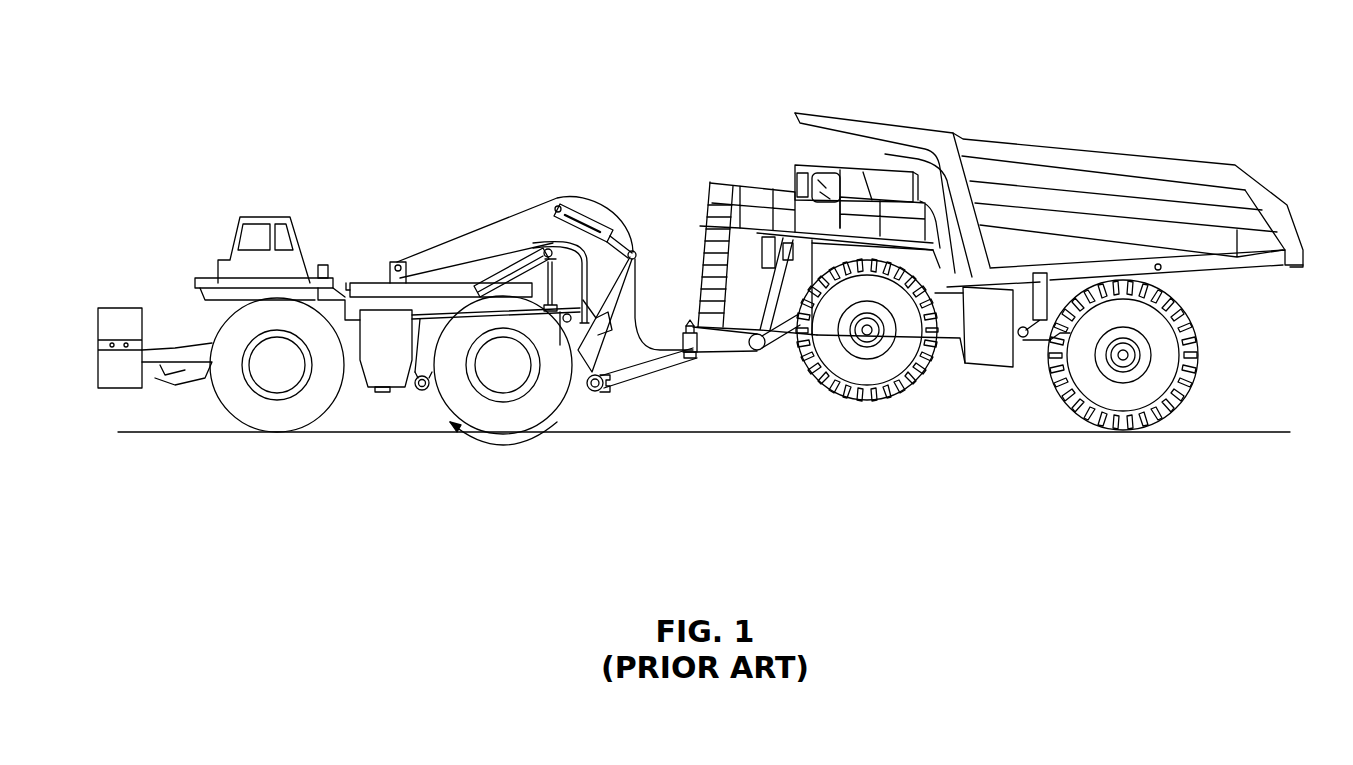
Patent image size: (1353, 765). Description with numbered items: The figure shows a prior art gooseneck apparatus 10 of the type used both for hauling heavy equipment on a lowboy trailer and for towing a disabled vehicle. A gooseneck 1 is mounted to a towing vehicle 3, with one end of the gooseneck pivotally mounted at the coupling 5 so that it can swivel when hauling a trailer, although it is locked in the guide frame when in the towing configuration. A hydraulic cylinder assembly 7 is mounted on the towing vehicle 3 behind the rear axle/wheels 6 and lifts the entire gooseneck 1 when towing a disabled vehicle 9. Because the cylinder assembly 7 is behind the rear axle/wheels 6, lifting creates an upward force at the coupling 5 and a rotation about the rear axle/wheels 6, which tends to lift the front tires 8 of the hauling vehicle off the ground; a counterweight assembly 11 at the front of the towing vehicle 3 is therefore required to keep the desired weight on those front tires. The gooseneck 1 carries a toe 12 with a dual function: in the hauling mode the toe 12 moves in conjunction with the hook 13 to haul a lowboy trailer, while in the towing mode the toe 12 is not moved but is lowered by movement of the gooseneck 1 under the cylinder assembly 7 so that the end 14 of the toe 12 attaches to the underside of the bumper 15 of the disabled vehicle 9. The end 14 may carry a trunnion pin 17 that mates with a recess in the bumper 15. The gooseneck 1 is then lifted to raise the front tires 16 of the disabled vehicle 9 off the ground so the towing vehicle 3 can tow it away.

The gooseneck 1 is at (583, 170).
The towing vehicle 3 is at (310, 213).
The pivotal mounting 5 is at (410, 235).
The rear axle/wheels 6 is at (563, 407).
The hydraulic cylinder assembly 7 is at (568, 273).
The front tires 8 is at (340, 407).
The disabled vehicle 9 is at (1062, 122).
The gooseneck apparatus 10 is at (402, 120).
The counterweight assembly 11 is at (117, 262).
The toe 12 is at (648, 358).
The hook 13 is at (600, 400).
The end of the toe 14 is at (685, 355).
The bumper 15 is at (692, 323).
The front tires 16 is at (917, 387).
The trunnion pin 17 is at (700, 368).